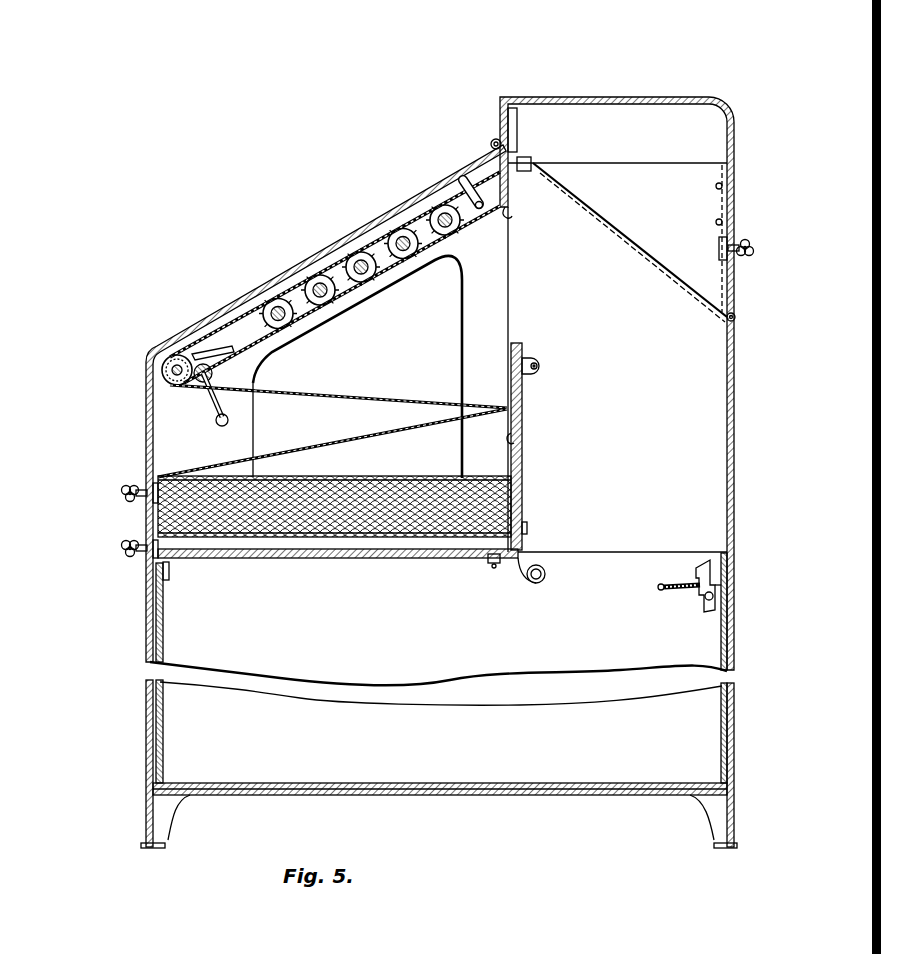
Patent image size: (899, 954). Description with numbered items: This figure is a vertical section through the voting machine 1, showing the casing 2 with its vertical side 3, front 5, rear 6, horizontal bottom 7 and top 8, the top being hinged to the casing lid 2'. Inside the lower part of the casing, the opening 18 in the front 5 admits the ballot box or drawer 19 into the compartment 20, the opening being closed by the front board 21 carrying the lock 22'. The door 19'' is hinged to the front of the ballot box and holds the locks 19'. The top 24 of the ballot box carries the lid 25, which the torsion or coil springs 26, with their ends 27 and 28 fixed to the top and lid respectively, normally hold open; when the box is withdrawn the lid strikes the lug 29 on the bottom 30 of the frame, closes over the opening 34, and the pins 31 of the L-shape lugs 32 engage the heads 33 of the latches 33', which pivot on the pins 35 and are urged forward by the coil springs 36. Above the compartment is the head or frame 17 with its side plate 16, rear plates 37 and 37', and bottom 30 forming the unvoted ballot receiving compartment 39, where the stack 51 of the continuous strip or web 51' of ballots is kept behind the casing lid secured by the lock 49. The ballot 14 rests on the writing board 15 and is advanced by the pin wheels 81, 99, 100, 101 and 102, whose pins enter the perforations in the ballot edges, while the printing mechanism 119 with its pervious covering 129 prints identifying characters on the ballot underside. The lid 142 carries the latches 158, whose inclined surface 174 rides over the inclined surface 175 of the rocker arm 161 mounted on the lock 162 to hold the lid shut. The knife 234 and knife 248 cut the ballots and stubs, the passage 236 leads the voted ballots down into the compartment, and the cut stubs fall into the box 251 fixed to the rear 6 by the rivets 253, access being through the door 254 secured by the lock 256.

The voting machine 1 is at (592, 97).
The casing 2 is at (638, 472).
The casing lid 2' is at (127, 395).
The vertical side 3 is at (665, 118).
The front 5 is at (146, 630).
The rear 6 is at (735, 146).
The bottom 7 is at (456, 797).
The top 8 is at (531, 96).
The ballot 14 is at (340, 393).
The writing board 15 is at (180, 353).
The side plate 16 is at (500, 303).
The head or frame 17 is at (510, 331).
The opening 18 is at (152, 779).
The ballot box or drawer 19 is at (438, 706).
The locks 19' is at (192, 589).
The door 19'' is at (195, 673).
The compartment 20 is at (148, 598).
The front board 21 is at (146, 704).
The lock 22' is at (109, 552).
The top of the ballot box 24 is at (382, 559).
The lid 25 is at (525, 485).
The torsion or coil springs 26 is at (550, 573).
The spring end 27 is at (505, 566).
The spring end 28 is at (530, 545).
The lug 29 is at (490, 559).
The bottom 30 is at (305, 545).
The pins 31 is at (546, 362).
The L-shape lugs 32 is at (541, 372).
The heads 33 is at (695, 550).
The latches 33' is at (759, 578).
The opening 34 is at (730, 546).
The pins 35 is at (713, 598).
The coil springs 36 is at (672, 593).
The rear plate 37 is at (529, 219).
The rear plate 37' is at (555, 433).
The unvoted ballot receiving compartment 39 is at (505, 461).
The lock 49 is at (128, 488).
The stack 51 is at (334, 491).
The continuous strip or web 51' is at (332, 431).
The pin wheel 81 is at (445, 205).
The pin wheel 99 is at (405, 228).
The pin wheel 100 is at (363, 252).
The pin wheel 101 is at (320, 275).
The pin wheel 102 is at (278, 298).
The printing mechanism 119 is at (150, 350).
The pervious covering 129 is at (289, 349).
The lid 142 is at (288, 267).
The latches 158 is at (205, 360).
The rocker arm 161 is at (160, 415).
The lock 162 is at (150, 441).
The inclined surface 174 is at (230, 422).
The inclined surface 175 is at (214, 373).
The knife 234 is at (520, 146).
The passage 236 is at (735, 378).
The knife 248 is at (470, 178).
The box 251 is at (637, 162).
The rivets 253 is at (736, 222).
The door 254 is at (738, 317).
The lock 256 is at (749, 258).